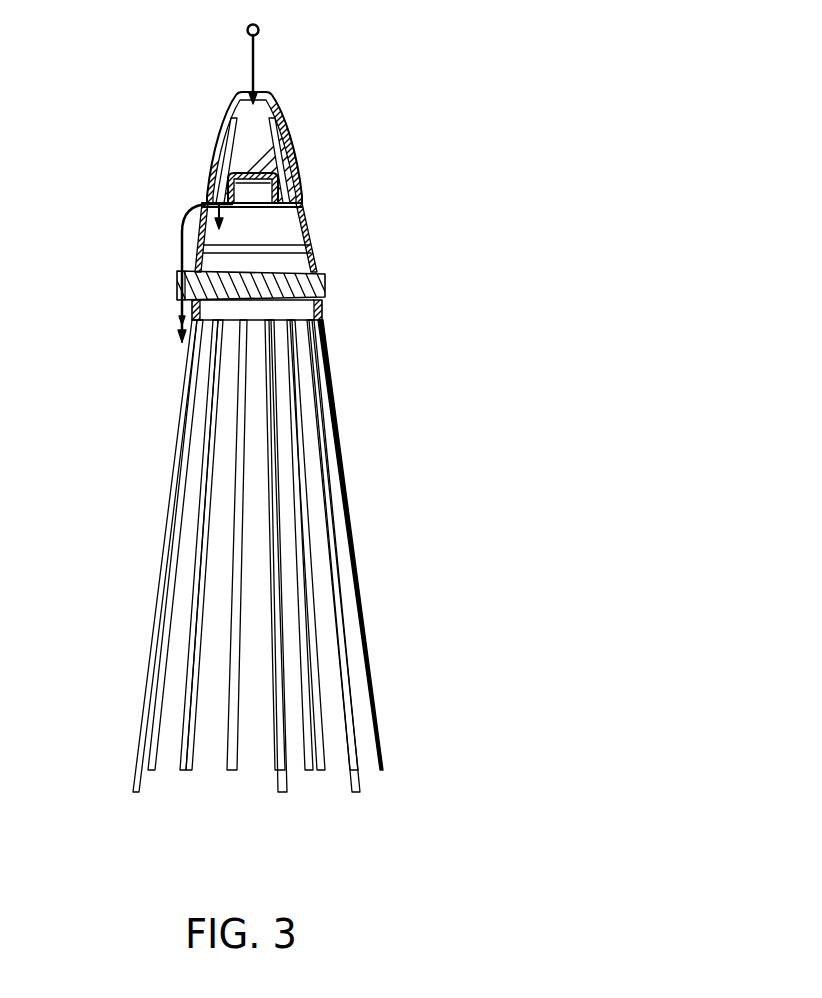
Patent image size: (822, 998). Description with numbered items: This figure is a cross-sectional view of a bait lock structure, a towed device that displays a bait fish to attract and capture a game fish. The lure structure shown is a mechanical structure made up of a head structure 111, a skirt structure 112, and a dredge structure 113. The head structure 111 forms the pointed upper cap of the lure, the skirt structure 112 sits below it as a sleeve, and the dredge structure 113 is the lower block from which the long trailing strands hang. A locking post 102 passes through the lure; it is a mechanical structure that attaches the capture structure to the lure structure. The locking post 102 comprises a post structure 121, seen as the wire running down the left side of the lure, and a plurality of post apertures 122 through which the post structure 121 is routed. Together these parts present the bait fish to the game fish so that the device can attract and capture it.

The head structure 111 is at (298, 135).
The skirt structure 112 is at (320, 233).
The locking post 102 is at (325, 287).
The dredge structure 113 is at (325, 317).
The plurality of post apertures 122 is at (182, 302).
The post structure 121 is at (181, 320).